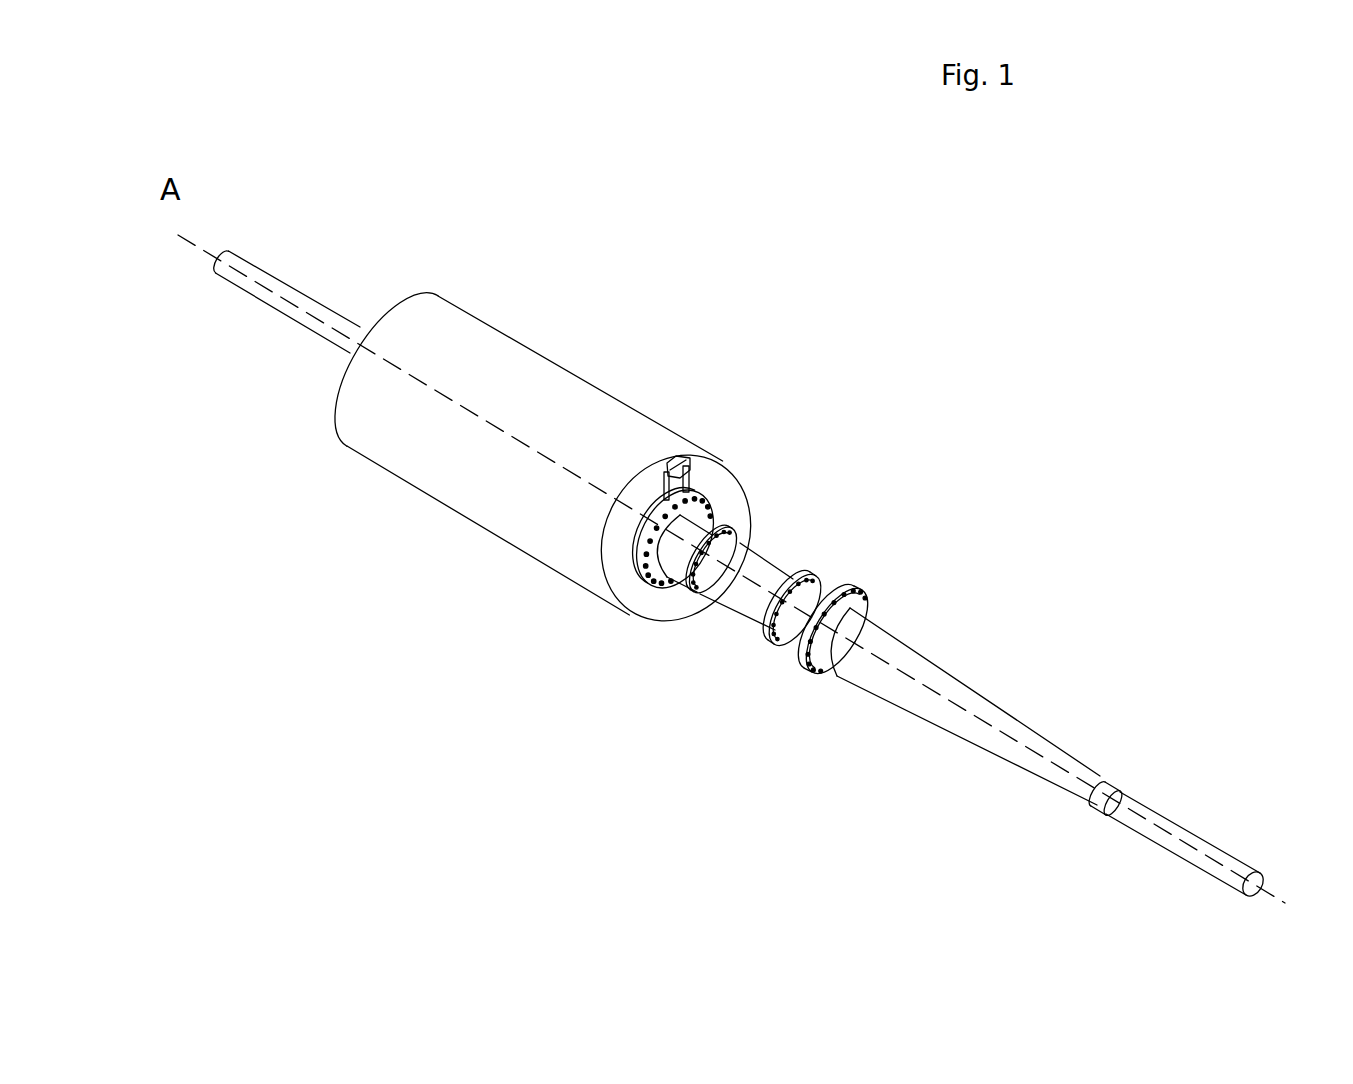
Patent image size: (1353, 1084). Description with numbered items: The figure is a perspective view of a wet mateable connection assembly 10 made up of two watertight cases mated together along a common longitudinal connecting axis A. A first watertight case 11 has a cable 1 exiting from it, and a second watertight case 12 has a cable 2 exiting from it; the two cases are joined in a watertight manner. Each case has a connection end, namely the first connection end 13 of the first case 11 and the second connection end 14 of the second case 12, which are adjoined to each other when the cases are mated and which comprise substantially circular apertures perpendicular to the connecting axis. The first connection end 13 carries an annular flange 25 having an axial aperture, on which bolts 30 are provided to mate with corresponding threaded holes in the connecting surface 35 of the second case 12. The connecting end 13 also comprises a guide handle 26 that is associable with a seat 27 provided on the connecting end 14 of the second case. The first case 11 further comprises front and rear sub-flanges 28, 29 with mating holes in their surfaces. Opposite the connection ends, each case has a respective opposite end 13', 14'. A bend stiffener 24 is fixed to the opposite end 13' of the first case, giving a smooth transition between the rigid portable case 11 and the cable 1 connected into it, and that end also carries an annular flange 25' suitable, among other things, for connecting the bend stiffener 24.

The cable 1 is at (1172, 843).
The cable 2 is at (290, 292).
The wet mateable connection assembly 10 is at (716, 304).
The first watertight case 11 is at (760, 570).
The second watertight case 12 is at (467, 352).
The first connection end 13 is at (739, 539).
The opposite end of the first case 13' is at (905, 622).
The second connection end 14 is at (692, 500).
The opposite end of the second case 14' is at (288, 370).
The bend stiffener 24 is at (985, 695).
The annular flange 25 is at (635, 565).
The annular flange 25' is at (812, 658).
The guide handle 26 is at (676, 460).
The seat 27 is at (668, 477).
The front sub-flange 28 is at (696, 603).
The rear sub-flange 29 is at (807, 582).
The bolts 30 is at (658, 588).
The connecting surface 35 is at (722, 487).